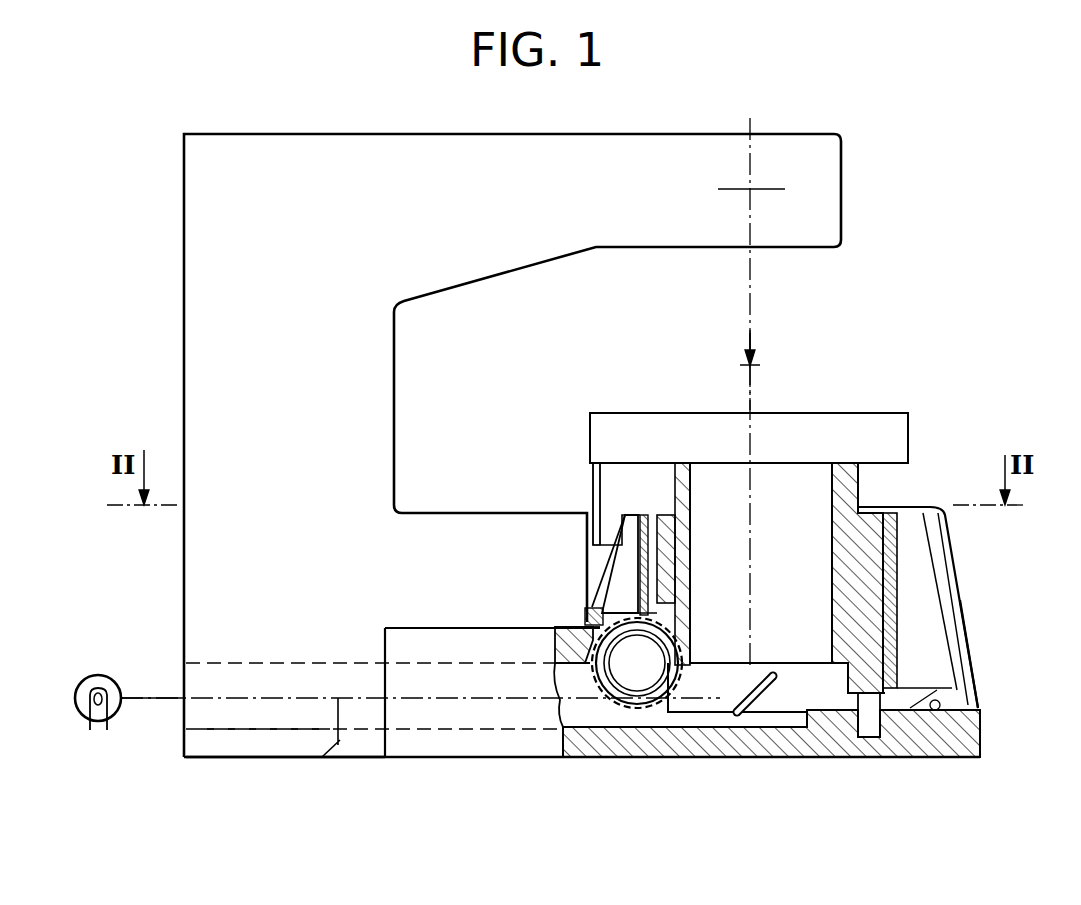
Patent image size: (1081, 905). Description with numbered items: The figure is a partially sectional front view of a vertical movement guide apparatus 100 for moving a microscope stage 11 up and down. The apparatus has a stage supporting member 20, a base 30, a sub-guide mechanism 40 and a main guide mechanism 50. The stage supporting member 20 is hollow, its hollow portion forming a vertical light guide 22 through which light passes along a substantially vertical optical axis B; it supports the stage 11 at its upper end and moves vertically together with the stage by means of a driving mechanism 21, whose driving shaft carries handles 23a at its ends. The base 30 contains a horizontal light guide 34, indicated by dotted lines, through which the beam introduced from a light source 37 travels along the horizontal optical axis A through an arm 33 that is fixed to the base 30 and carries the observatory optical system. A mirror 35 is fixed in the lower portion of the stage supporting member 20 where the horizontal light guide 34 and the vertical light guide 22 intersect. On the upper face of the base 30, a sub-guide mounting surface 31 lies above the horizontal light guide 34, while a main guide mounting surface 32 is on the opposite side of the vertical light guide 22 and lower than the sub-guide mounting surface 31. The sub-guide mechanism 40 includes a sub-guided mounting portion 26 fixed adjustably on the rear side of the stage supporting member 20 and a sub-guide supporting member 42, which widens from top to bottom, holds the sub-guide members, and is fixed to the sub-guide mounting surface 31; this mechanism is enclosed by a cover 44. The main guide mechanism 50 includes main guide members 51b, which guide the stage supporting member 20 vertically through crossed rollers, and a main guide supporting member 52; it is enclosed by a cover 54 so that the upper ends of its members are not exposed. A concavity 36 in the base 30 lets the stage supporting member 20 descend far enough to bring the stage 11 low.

The vertical movement guide apparatus 100 is at (886, 230).
The stage 11 is at (905, 412).
The vertical light guide 22 is at (788, 494).
The sub-guided mounting portion 26 is at (673, 513).
The sub-guide mechanism 40 is at (611, 516).
The sub-guide supporting member 42 is at (610, 573).
The cover 44 is at (593, 463).
The stage supporting member 20 is at (838, 600).
The driving mechanism 21 is at (590, 655).
The handles 23a is at (640, 710).
The base 30 is at (548, 757).
The sub-guide mounting surface 31 is at (592, 606).
The main guide mounting surface 32 is at (948, 757).
The arm 33 is at (207, 758).
The horizontal light guide 34 is at (298, 731).
The mirror 35 is at (760, 716).
The concavity 36 is at (913, 757).
The light source 37 is at (98, 676).
The main guide mechanism 50 is at (962, 637).
The main guide members 51b is at (873, 703).
The main guide supporting member 52 is at (893, 595).
The cover 54 is at (972, 677).
The horizontal optical axis A is at (345, 757).
The optical axis B is at (752, 402).